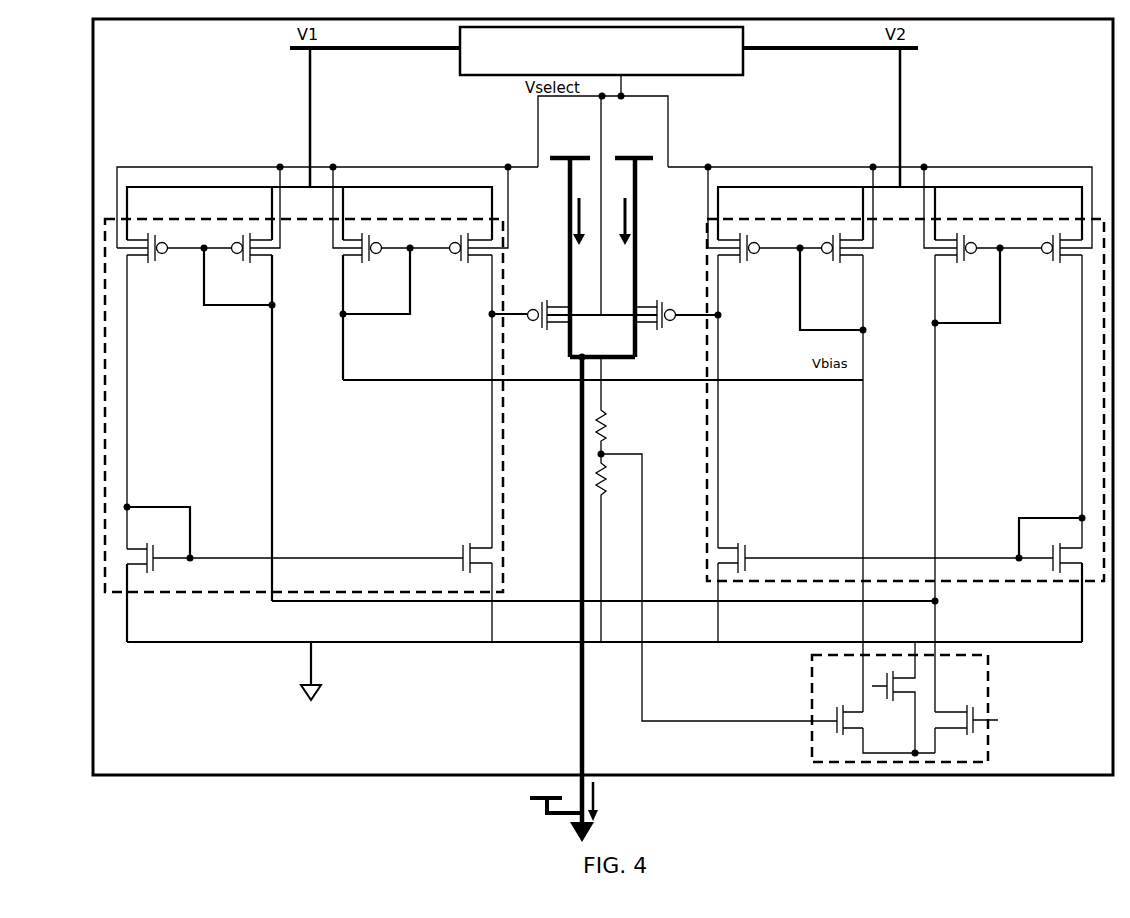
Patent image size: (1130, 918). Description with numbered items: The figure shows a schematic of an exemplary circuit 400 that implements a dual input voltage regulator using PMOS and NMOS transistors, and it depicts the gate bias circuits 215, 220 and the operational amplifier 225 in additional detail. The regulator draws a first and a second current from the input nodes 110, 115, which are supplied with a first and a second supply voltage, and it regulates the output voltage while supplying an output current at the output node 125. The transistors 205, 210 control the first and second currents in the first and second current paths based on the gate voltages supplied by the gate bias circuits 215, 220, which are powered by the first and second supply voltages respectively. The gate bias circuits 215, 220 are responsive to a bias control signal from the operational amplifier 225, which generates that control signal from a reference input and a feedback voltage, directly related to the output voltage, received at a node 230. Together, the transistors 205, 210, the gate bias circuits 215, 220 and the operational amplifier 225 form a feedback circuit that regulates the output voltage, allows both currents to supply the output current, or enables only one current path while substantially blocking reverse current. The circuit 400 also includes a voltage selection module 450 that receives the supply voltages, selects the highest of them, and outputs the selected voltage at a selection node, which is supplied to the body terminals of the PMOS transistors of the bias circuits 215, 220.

The circuit 400 is at (215, 795).
The voltage selection module 450 is at (601, 51).
The input node 110 is at (558, 190).
The input node 115 is at (647, 191).
The output node 125 is at (576, 734).
The transistor 205 is at (548, 298).
The transistor 210 is at (662, 302).
The gate bias circuit 215 is at (217, 593).
The gate bias circuit 220 is at (985, 583).
The operational amplifier 225 is at (809, 694).
The node 230 is at (725, 721).